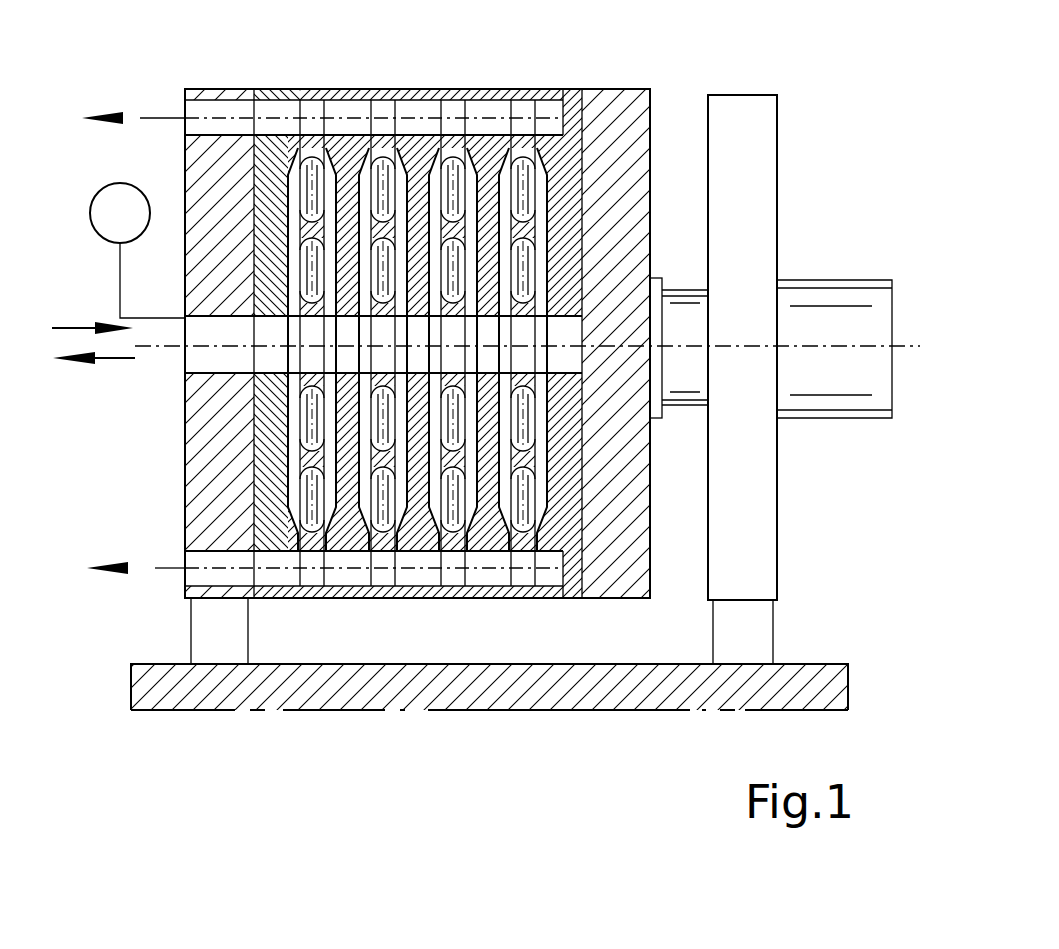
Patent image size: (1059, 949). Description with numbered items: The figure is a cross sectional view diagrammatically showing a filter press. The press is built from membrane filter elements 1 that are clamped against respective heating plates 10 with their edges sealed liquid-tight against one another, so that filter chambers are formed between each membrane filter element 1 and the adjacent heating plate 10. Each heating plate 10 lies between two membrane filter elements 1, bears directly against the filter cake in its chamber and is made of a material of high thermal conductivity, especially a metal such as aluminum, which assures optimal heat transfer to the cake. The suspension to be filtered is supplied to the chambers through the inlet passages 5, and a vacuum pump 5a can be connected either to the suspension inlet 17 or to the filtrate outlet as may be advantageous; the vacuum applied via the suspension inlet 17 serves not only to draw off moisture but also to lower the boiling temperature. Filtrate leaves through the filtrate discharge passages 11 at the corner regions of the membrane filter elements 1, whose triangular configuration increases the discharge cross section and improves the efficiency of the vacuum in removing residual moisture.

The membrane filter elements 1 is at (552, 89).
The inlet passages 5 is at (332, 357).
The vacuum pump 5a is at (110, 184).
The heating plates 10 is at (518, 598).
The filtrate discharge passages 11 is at (203, 577).
The suspension inlet 17 is at (222, 358).